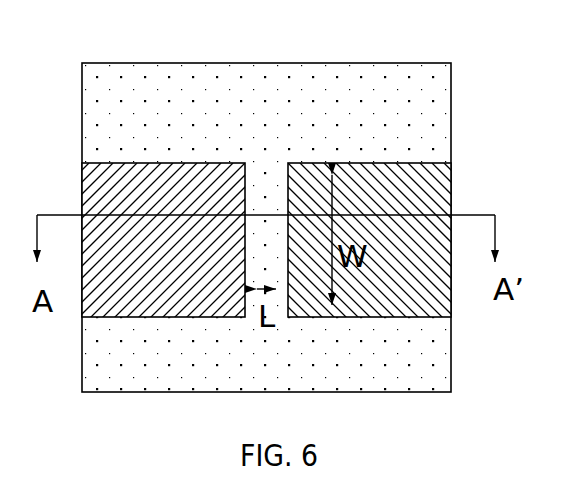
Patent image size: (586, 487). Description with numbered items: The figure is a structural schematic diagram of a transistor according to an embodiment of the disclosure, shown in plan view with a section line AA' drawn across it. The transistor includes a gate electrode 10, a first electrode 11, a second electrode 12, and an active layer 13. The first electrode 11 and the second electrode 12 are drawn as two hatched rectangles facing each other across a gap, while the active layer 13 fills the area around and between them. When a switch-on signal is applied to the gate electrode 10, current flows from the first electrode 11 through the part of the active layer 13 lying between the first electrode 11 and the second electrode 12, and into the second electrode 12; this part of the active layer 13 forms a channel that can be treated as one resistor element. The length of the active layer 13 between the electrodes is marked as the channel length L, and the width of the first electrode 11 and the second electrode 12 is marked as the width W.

The gate electrode 10 is at (268, 90).
The first electrode 11 is at (100, 193).
The second electrode 12 is at (418, 175).
The active layer 13 is at (107, 83).